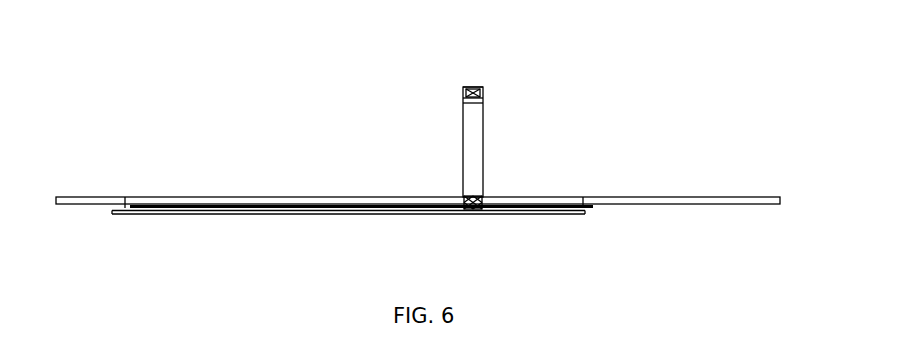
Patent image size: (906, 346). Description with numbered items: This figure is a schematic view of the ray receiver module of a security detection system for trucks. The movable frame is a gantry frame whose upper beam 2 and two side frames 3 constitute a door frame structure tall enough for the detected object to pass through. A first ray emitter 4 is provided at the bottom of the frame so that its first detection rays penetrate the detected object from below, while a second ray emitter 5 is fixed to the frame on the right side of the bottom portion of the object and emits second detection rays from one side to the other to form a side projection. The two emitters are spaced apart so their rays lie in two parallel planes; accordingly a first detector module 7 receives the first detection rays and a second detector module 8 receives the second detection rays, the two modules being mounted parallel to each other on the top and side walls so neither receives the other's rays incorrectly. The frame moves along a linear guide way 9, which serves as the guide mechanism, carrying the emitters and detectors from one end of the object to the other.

The upper beam 2 is at (435, 87).
The side frame 3 is at (517, 134).
The first ray emitter 4 is at (418, 226).
The second ray emitter 5 is at (518, 164).
The first detector module 7 is at (438, 59).
The second detector module 8 is at (504, 59).
The linear guide way 9 is at (365, 236).